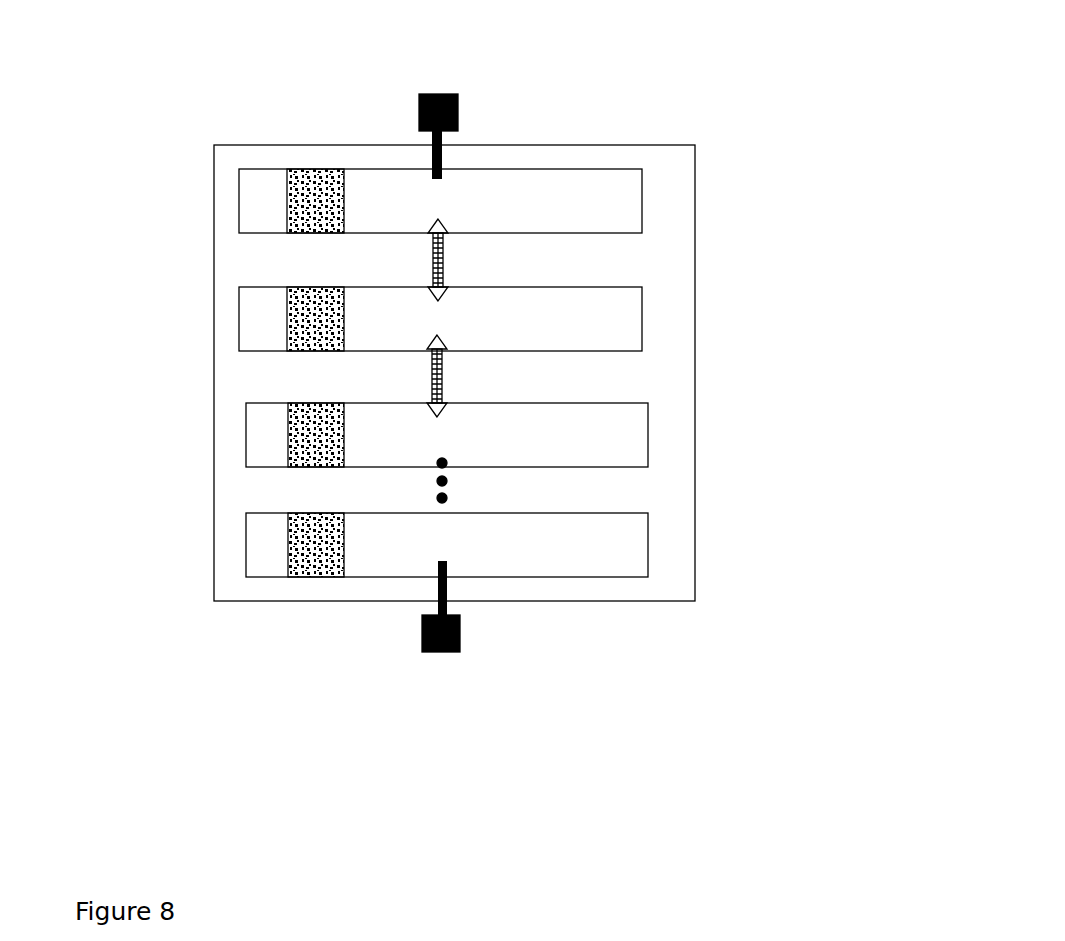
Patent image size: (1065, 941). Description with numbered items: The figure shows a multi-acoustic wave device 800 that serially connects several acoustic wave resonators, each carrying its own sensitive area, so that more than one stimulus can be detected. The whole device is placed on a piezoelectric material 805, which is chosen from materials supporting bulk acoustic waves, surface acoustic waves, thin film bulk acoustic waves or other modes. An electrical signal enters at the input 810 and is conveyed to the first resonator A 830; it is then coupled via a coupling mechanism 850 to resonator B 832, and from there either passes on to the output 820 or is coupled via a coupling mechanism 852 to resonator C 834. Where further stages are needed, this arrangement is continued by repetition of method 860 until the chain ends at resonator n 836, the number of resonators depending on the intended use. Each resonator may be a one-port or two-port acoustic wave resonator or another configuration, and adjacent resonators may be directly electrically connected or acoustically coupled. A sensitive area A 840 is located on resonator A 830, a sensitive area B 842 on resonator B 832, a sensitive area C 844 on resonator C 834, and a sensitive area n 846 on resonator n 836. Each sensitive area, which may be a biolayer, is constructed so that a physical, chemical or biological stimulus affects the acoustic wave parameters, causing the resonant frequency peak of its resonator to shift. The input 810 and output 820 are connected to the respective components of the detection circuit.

The multi-acoustic wave device 800 is at (325, 683).
The piezoelectric material 805 is at (692, 158).
The input 810 is at (467, 102).
The output 820 is at (468, 638).
The resonator A 830 is at (347, 189).
The resonator B 832 is at (347, 313).
The resonator C 834 is at (350, 427).
The resonator n 836 is at (350, 538).
The sensitive area A 840 is at (300, 188).
The sensitive area B 842 is at (310, 320).
The sensitive area C 844 is at (300, 430).
The sensitive area n 846 is at (297, 523).
The coupling mechanism 850 is at (458, 259).
The coupling mechanism 852 is at (457, 369).
The repetition of method 860 is at (458, 475).